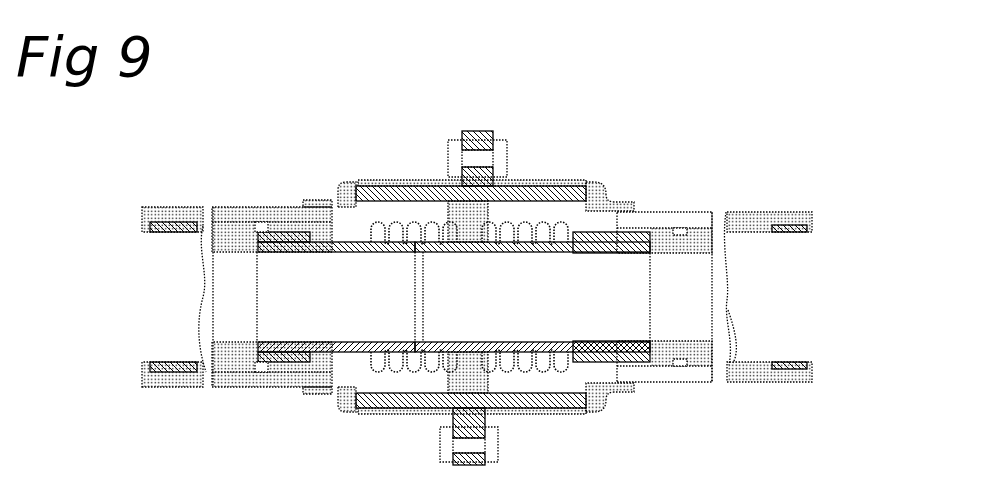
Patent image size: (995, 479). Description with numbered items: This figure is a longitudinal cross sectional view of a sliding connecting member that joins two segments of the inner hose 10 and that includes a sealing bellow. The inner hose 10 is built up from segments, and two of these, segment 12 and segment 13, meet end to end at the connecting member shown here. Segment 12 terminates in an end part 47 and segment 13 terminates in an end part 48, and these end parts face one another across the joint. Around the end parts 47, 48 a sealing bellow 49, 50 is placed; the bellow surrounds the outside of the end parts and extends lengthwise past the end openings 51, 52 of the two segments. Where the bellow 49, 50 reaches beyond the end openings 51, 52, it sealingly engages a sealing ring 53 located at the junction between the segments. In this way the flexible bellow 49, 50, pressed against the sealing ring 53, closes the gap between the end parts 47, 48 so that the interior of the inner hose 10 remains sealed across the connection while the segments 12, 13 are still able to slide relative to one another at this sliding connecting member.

The inner hose 10 is at (795, 322).
The segment 12 is at (686, 241).
The segment 13 is at (235, 241).
The end part 47 is at (540, 251).
The end part 48 is at (353, 254).
The sealing bellow 49 is at (377, 223).
The sealing bellow 50 is at (541, 221).
The end opening 51 is at (413, 306).
The end opening 52 is at (418, 310).
The sealing ring 53 is at (480, 216).